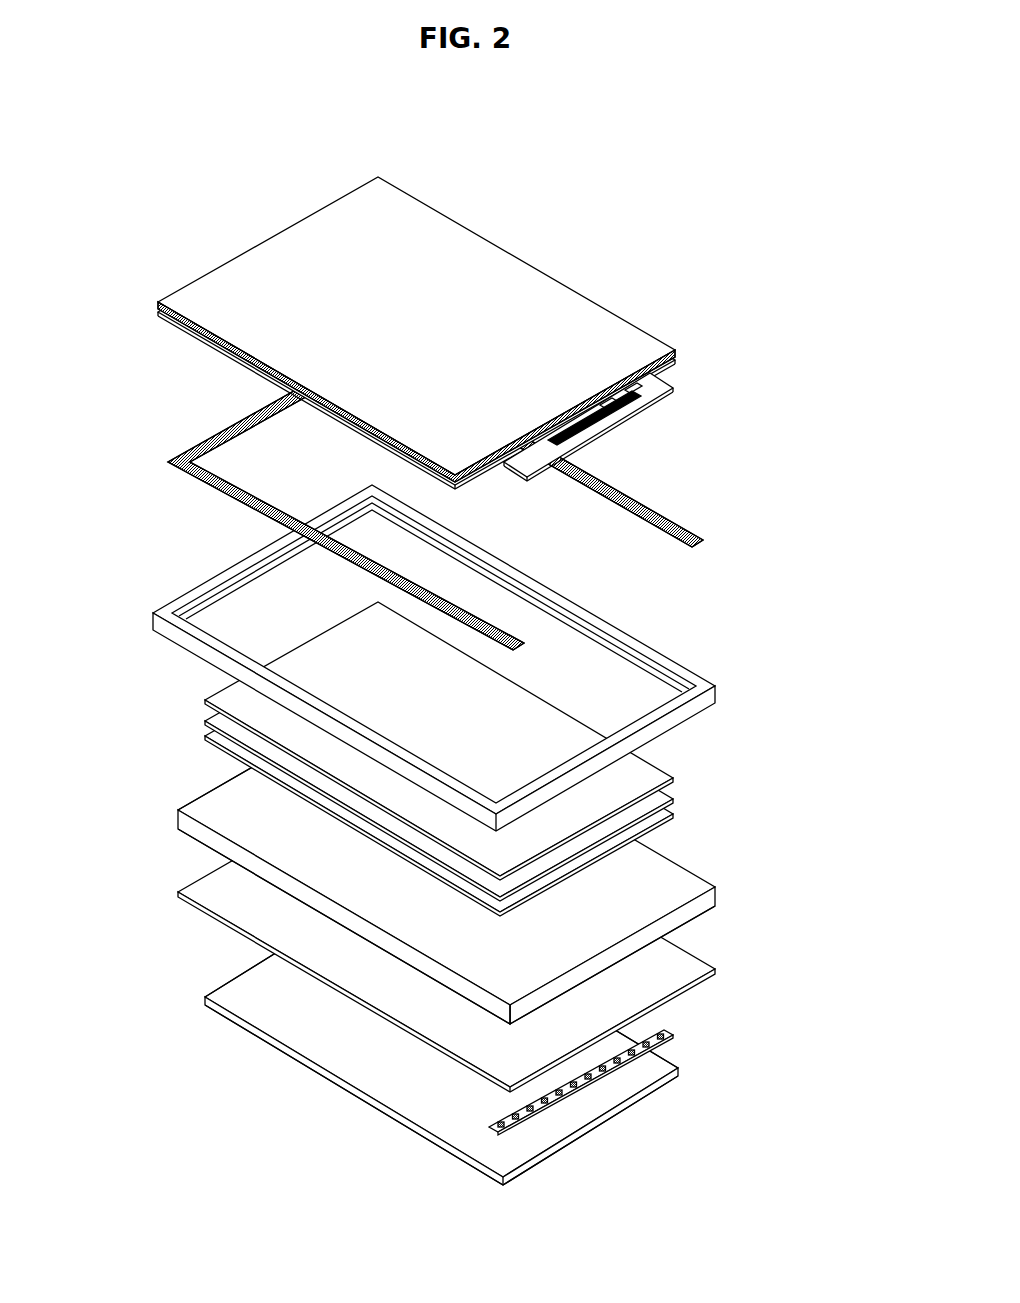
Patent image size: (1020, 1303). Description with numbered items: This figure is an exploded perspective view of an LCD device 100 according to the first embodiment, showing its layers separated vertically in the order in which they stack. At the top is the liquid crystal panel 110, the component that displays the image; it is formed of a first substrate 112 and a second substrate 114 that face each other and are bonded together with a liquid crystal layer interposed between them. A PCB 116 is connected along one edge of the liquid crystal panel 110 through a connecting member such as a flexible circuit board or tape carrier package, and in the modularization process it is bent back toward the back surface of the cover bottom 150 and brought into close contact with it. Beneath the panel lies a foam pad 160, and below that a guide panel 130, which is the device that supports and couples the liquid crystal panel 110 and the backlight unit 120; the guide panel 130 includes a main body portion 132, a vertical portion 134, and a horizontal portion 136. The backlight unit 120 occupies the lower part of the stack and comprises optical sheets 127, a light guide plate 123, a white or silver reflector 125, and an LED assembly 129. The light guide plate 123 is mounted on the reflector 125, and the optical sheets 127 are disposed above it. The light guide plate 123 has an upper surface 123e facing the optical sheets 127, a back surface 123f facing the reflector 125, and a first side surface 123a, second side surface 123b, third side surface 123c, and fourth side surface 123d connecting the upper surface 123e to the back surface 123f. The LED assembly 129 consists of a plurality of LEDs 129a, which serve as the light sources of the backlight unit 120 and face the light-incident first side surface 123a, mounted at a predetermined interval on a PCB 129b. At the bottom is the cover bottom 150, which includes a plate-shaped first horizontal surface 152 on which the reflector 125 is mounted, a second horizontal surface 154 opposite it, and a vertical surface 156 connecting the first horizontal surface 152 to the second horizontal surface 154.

The LCD device 100 is at (387, 115).
The liquid crystal panel 110 is at (508, 333).
The first substrate 112 is at (680, 349).
The second substrate 114 is at (620, 328).
The PCB 116 is at (672, 377).
The backlight unit 120 is at (461, 893).
The light guide plate 123 is at (437, 858).
The first side surface 123a is at (673, 918).
The second side surface 123b is at (197, 828).
The third side surface 123c is at (210, 777).
The fourth side surface 123d is at (677, 860).
The upper surface 123e is at (208, 803).
The back surface 123f is at (207, 848).
The reflector 125 is at (715, 967).
The optical sheets 127 is at (684, 777).
The LED assembly 129 is at (659, 1079).
The LEDs 129a is at (670, 1028).
The PCB 129b is at (665, 1050).
The guide panel 130 is at (506, 658).
The main body portion 132 is at (690, 660).
The vertical portion 134 is at (712, 690).
The horizontal portion 136 is at (809, 628).
The cover bottom 150 is at (358, 1036).
The first horizontal surface 152 is at (248, 990).
The second horizontal surface 154 is at (233, 1023).
The vertical surface 156 is at (248, 1038).
The foam pad 160 is at (192, 446).